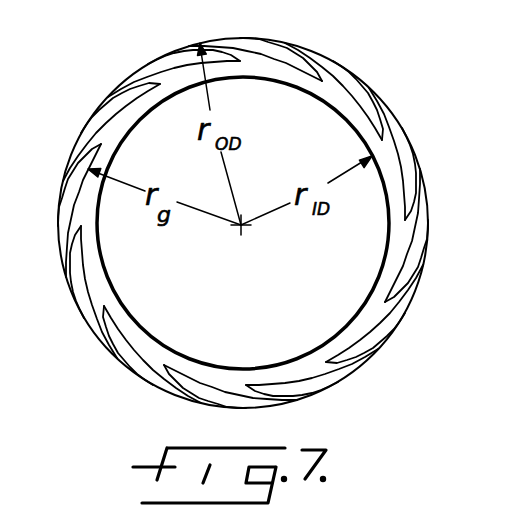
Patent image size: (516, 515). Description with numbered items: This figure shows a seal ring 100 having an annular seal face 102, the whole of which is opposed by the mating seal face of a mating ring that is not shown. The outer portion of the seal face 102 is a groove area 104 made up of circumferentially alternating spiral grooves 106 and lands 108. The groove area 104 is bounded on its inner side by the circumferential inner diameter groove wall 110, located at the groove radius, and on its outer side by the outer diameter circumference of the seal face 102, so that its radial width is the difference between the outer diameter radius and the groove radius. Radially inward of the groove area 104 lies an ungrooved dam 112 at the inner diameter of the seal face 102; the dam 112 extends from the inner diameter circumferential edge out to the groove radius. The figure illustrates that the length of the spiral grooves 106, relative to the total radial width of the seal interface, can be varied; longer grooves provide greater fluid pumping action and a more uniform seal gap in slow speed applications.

The seal ring 100 is at (342, 57).
The seal face 102 is at (429, 243).
The groove area 104 is at (85, 112).
The spiral grooves 106 is at (263, 62).
The lands 108 is at (186, 400).
The circumferential inner diameter groove wall 110 is at (74, 230).
The ungrooved dam 112 is at (344, 338).